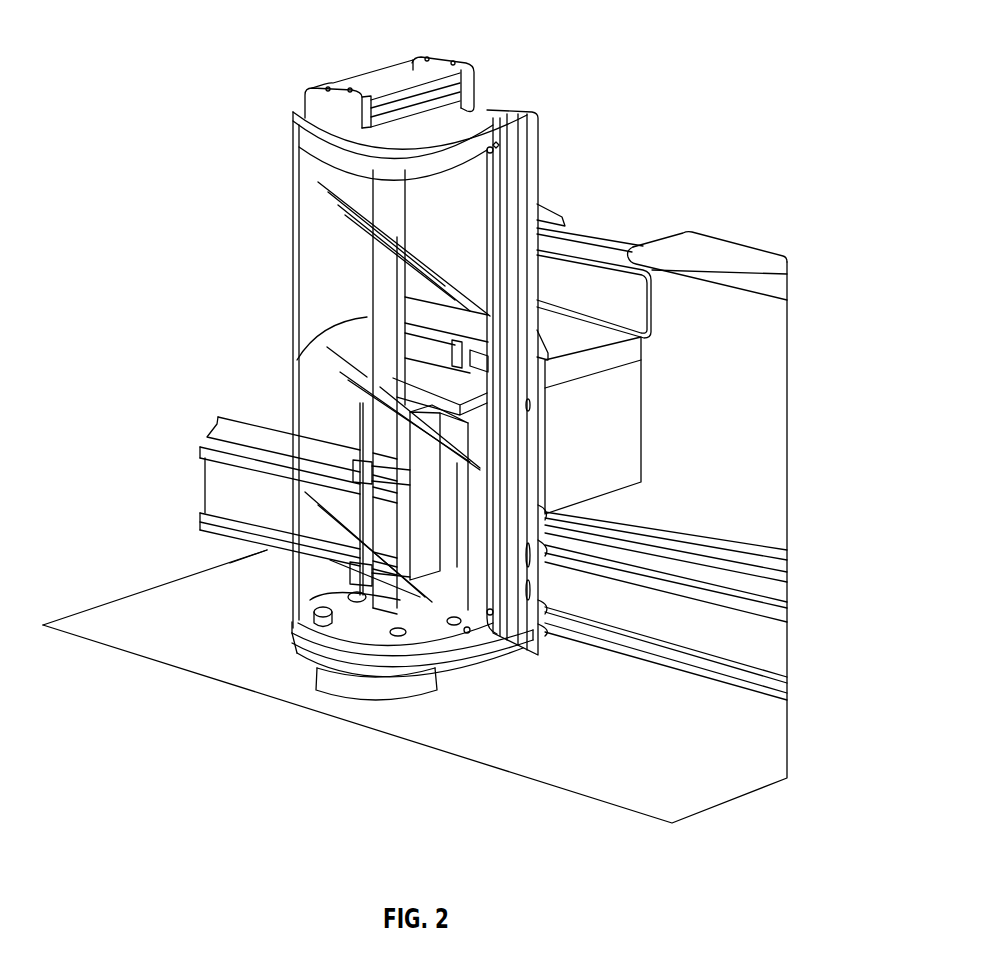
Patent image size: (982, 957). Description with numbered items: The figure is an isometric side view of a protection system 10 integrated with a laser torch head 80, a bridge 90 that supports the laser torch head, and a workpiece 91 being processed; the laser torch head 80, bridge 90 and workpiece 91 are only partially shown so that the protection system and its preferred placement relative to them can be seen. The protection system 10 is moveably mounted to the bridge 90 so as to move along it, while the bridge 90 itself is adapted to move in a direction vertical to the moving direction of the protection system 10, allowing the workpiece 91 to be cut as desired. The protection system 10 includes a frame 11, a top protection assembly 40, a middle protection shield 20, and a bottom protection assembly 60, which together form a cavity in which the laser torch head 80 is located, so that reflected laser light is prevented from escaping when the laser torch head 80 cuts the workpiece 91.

The protection system 10 is at (259, 44).
The frame 11 is at (530, 150).
The middle protection shield 20 is at (296, 273).
The top protection assembly 40 is at (292, 123).
The bottom protection assembly 60 is at (333, 687).
The laser torch head 80 is at (297, 360).
The bridge 90 is at (655, 528).
The workpiece 91 is at (170, 590).